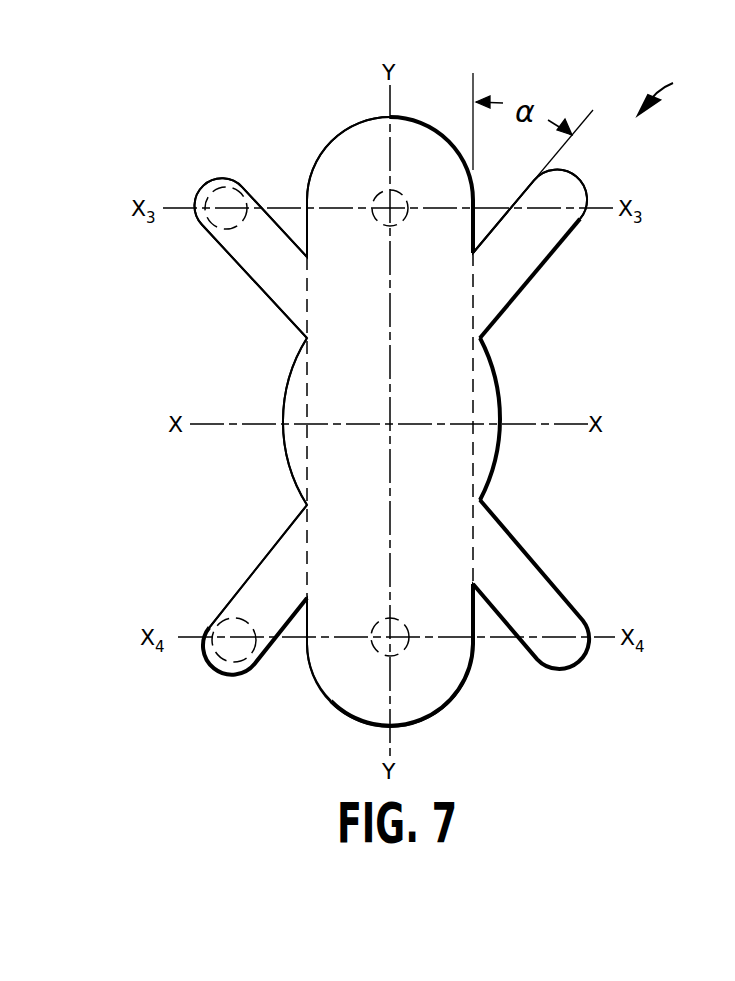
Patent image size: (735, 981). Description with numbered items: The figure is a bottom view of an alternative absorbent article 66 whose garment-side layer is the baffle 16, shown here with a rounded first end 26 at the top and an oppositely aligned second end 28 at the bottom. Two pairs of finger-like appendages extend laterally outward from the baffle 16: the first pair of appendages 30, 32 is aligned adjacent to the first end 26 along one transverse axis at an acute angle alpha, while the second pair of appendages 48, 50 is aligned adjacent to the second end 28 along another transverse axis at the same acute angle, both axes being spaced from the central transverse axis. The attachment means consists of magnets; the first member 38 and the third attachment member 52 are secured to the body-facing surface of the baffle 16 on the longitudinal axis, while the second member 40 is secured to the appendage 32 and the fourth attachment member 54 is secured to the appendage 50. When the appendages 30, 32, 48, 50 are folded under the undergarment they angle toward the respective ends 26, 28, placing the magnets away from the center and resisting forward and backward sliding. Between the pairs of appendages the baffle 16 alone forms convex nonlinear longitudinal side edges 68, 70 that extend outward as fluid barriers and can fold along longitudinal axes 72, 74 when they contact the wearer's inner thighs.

The baffle 16 is at (452, 338).
The first end 26 is at (352, 125).
The second end 28 is at (440, 710).
The first appendage 30 is at (543, 243).
The second appendage 32 is at (253, 258).
The first member 38 is at (410, 210).
The second member 40 is at (242, 180).
The third appendage 48 is at (528, 583).
The fourth appendage 50 is at (268, 575).
The third attachment member 52 is at (400, 620).
The fourth attachment member 54 is at (253, 640).
The absorbent article 66 is at (674, 92).
The nonlinear longitudinal side edge 68 is at (495, 378).
The nonlinear longitudinal side edge 70 is at (287, 390).
The longitudinal axis 72 is at (472, 452).
The longitudinal axis 74 is at (308, 450).